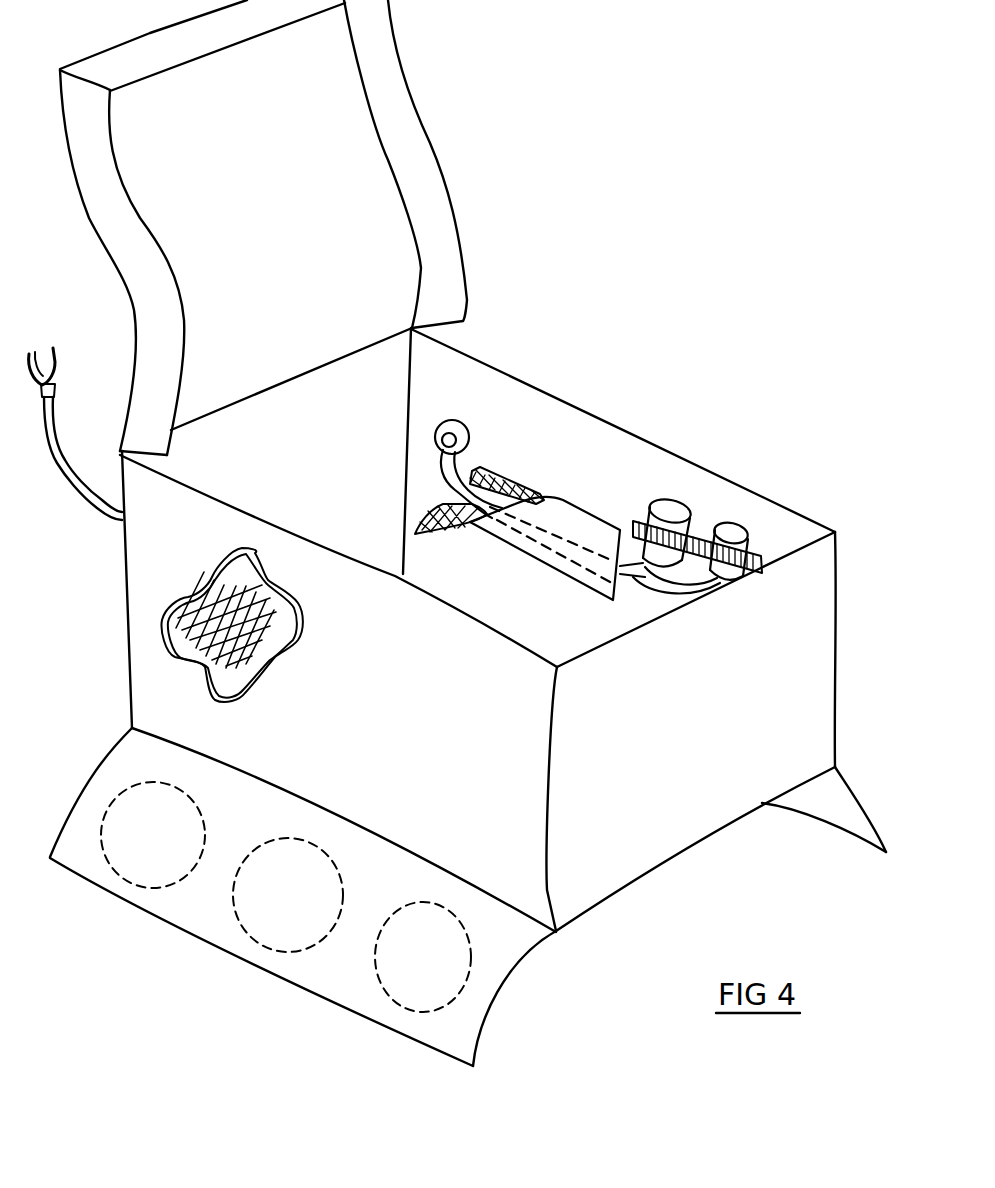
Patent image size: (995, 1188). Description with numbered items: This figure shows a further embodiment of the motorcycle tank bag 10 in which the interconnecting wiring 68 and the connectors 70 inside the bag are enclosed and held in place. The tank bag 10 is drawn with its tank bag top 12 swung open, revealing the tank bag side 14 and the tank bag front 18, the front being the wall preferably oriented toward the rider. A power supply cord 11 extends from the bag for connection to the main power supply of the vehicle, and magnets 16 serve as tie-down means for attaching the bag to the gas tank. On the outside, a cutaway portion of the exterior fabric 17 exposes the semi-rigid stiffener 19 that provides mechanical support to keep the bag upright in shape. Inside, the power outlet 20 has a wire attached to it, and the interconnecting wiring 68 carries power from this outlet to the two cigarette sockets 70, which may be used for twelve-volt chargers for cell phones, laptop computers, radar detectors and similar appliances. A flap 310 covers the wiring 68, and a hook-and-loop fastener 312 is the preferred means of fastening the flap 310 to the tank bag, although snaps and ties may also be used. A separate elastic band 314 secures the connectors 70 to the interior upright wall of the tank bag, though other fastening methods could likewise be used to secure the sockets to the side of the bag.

The motorcycle tank bag 10 is at (513, 367).
The power supply cord 11 is at (58, 426).
The tank bag top 12 is at (413, 165).
The tank bag side 14 is at (748, 486).
The magnets 16 is at (143, 843).
The exterior fabric 17 is at (168, 555).
The tank bag front 18 is at (685, 809).
The semi-rigid stiffener 19 is at (253, 653).
The power outlet 20 is at (464, 427).
The interconnecting wiring 68 is at (441, 469).
The cigarette sockets 70 is at (667, 507).
The flap 310 is at (560, 512).
The hook-and-loop fastener 312 is at (497, 478).
The elastic band 314 is at (693, 533).